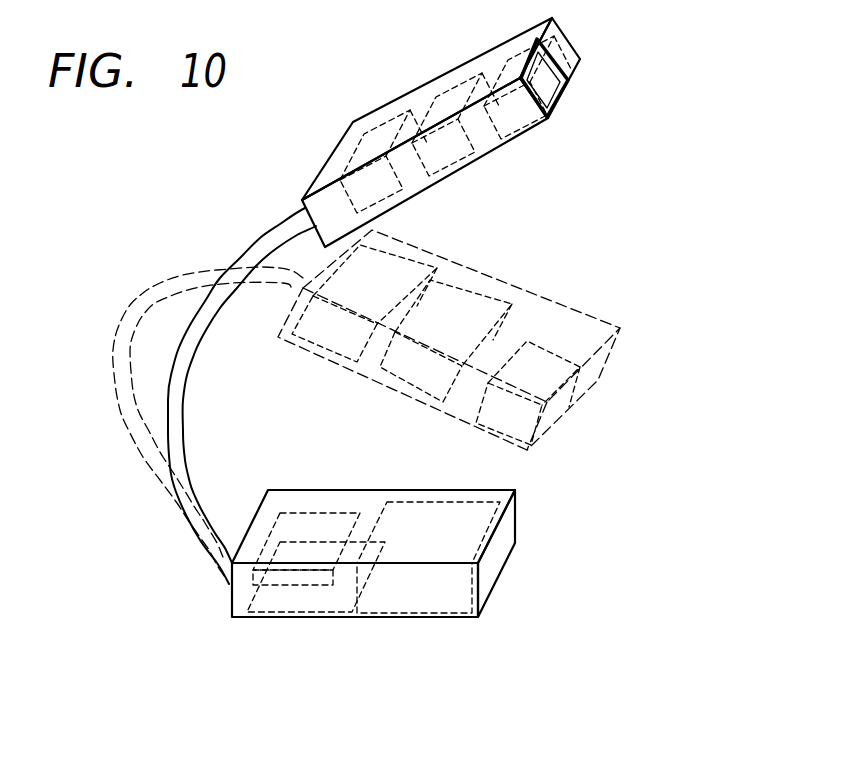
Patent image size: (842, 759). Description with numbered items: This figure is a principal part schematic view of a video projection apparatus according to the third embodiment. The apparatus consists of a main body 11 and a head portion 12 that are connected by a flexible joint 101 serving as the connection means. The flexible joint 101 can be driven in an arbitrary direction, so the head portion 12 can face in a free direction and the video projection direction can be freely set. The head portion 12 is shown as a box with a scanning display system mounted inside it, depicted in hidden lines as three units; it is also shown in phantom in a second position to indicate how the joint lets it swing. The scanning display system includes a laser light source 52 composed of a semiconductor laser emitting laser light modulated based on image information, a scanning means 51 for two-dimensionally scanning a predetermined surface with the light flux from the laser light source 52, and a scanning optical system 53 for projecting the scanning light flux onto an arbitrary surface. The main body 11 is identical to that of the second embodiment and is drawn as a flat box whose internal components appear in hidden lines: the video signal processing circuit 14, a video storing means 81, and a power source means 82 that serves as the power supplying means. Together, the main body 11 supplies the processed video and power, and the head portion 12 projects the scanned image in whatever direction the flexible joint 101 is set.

The main body 11 is at (515, 523).
The head portion 12 is at (566, 61).
The video signal processing circuit 14 is at (307, 593).
The scanning means 51 is at (477, 302).
The laser light source 52 is at (392, 268).
The scanning optical system 53 is at (550, 370).
The video storing means 81 is at (317, 522).
The power source means 82 is at (422, 593).
The flexible joint 101 is at (258, 241).